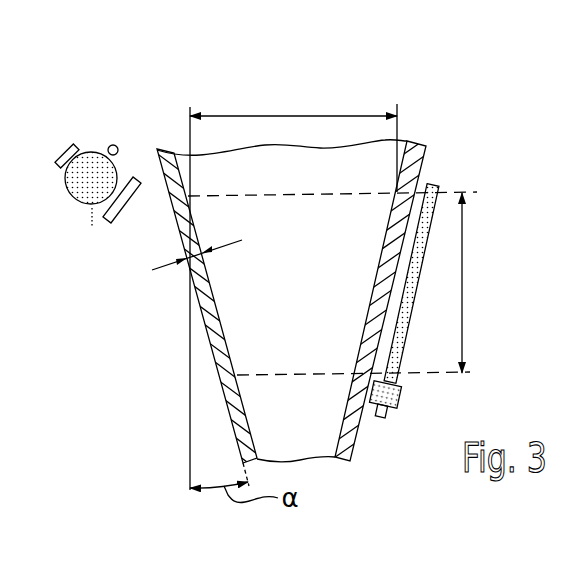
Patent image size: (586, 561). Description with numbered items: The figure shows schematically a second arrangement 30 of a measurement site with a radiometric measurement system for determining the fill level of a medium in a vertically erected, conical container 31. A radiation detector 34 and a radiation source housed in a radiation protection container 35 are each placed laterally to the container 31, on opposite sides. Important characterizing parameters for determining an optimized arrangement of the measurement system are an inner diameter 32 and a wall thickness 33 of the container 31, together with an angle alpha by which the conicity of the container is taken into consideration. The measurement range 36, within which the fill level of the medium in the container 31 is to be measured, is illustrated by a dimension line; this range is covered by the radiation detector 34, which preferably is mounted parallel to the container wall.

The second arrangement 30 is at (298, 253).
The conical container 31 is at (357, 450).
The inner diameter 32 is at (290, 115).
The wall thickness 33 is at (155, 270).
The radiation detector 34 is at (434, 182).
The radiation protection container 35 is at (85, 203).
The measurement range 36 is at (462, 278).